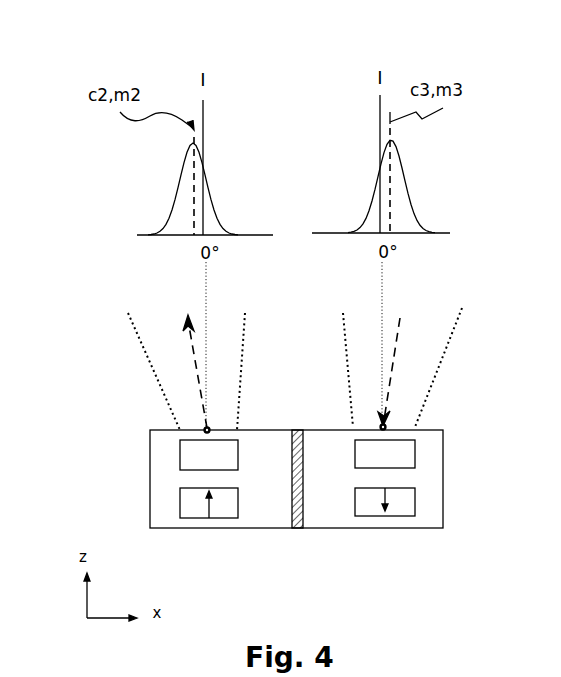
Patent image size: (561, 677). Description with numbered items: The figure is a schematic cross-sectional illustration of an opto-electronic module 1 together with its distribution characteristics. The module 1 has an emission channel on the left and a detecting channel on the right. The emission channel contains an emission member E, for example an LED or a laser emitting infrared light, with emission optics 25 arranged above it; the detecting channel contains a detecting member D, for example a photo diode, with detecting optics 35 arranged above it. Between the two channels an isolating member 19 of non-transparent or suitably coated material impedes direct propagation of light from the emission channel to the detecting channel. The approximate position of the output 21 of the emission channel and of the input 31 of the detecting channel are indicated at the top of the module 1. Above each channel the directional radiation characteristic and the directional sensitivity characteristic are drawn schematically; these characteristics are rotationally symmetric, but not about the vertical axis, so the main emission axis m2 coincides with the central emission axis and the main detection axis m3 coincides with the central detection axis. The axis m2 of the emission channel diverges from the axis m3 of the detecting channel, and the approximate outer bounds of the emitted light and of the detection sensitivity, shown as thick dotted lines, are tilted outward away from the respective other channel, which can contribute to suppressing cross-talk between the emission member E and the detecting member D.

The opto-electronic module 1 is at (150, 508).
The isolating member 19 is at (297, 528).
The output of emission channel 21 is at (209, 429).
The emission optics 25 is at (180, 453).
The input of detecting channel 31 is at (381, 426).
The detecting optics 35 is at (415, 455).
The emission member E is at (247, 519).
The detecting member D is at (397, 517).
The main emission axis m2 is at (190, 343).
The main detection axis m3 is at (398, 353).